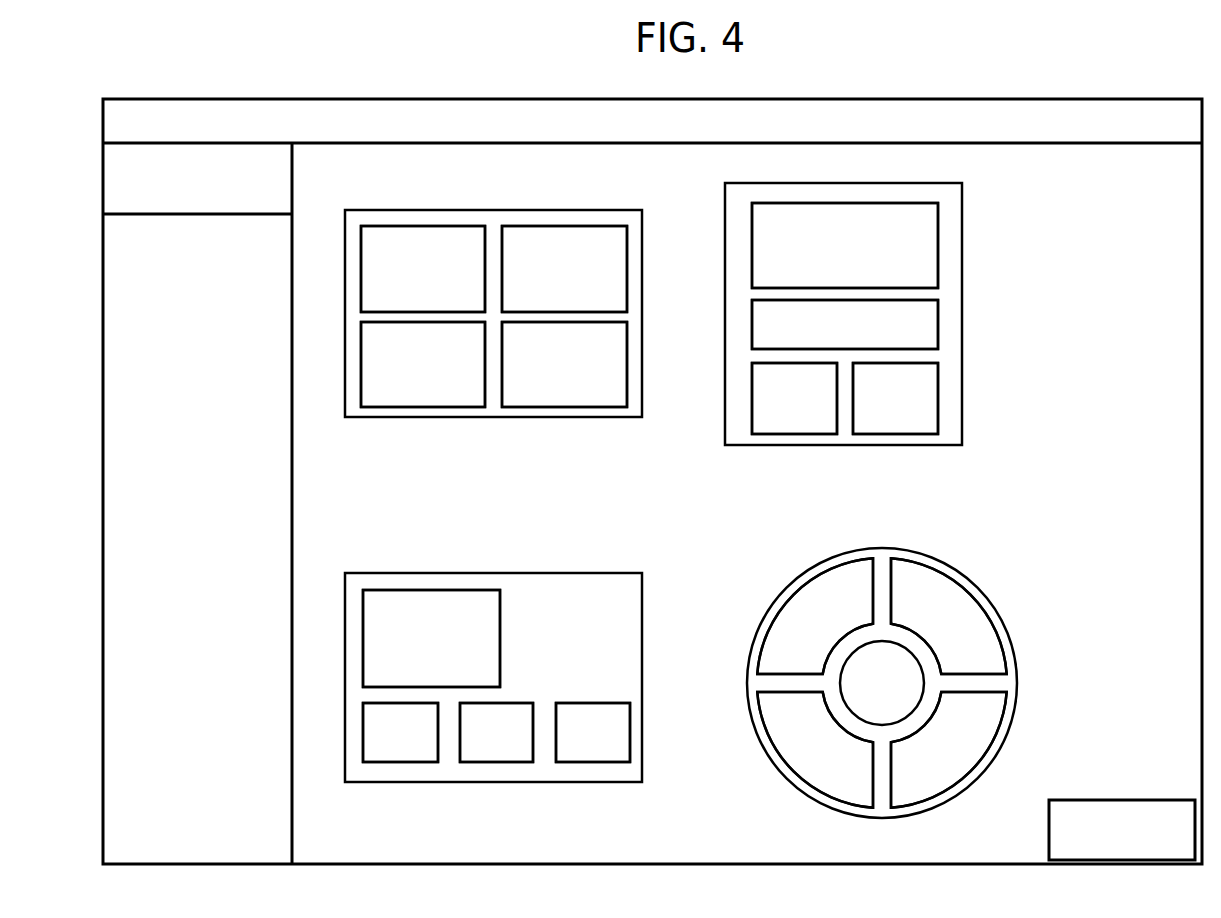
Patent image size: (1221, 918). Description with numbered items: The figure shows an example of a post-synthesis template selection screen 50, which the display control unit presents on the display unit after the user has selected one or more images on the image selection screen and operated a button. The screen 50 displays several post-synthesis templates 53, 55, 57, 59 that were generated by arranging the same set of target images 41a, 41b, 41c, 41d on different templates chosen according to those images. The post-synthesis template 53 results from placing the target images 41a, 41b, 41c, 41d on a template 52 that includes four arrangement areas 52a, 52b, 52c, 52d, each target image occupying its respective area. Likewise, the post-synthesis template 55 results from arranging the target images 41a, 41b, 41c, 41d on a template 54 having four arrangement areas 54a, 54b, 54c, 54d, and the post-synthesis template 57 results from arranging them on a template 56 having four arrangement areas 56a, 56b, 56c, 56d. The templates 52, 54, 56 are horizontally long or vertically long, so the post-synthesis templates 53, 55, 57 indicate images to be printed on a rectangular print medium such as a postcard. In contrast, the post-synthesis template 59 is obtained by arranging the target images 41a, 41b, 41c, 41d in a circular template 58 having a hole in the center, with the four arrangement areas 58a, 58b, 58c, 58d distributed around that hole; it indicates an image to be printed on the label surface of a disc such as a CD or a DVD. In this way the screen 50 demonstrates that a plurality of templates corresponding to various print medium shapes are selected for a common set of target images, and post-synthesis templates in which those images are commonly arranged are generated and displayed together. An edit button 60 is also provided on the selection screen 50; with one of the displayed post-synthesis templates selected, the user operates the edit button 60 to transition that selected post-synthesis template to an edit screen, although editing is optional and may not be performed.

The post-synthesis template selection screen 50 is at (800, 99).
The template 52 is at (493, 319).
The arrangement area 52a is at (435, 226).
The arrangement area 52b is at (563, 226).
The arrangement area 52c is at (423, 407).
The arrangement area 52d is at (582, 407).
The post-synthesis template 53 is at (474, 315).
The template 54 is at (848, 298).
The arrangement area 54a is at (752, 240).
The arrangement area 54b is at (752, 322).
The arrangement area 54c is at (752, 390).
The arrangement area 54d is at (940, 380).
The post-synthesis template 55 is at (848, 298).
The template 56 is at (493, 677).
The arrangement area 56a is at (442, 590).
The arrangement area 56b is at (385, 762).
The arrangement area 56c is at (490, 762).
The arrangement area 56d is at (588, 762).
The post-synthesis template 57 is at (473, 673).
The circular template 58 is at (882, 660).
The arrangement area 58a is at (838, 564).
The arrangement area 58b is at (950, 572).
The arrangement area 58c is at (766, 730).
The arrangement area 58d is at (998, 730).
The post-synthesis template 59 is at (882, 660).
The edit button 60 is at (1120, 862).
The target image 41a is at (370, 262).
The target image 41b is at (607, 247).
The target image 41c is at (372, 402).
The target image 41d is at (520, 402).